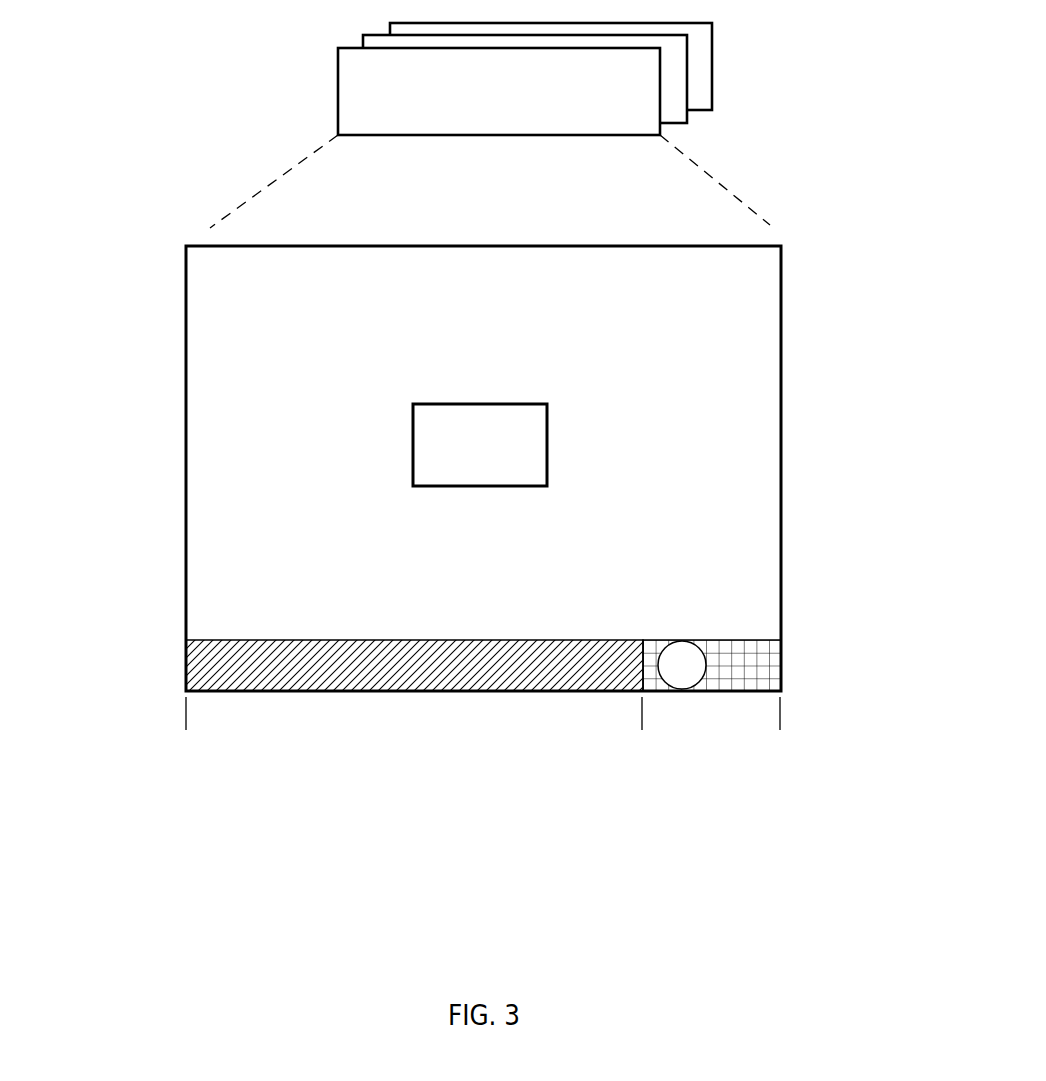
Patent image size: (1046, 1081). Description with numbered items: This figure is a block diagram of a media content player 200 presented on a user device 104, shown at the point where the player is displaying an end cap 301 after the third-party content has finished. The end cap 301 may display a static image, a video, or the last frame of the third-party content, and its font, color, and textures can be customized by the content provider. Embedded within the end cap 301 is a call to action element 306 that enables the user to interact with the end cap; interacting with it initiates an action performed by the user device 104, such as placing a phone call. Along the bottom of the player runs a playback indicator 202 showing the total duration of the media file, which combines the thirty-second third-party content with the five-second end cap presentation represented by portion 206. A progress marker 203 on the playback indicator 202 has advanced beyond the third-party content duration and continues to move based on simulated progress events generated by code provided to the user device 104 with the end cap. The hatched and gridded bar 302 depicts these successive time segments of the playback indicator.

The user device 104 is at (525, 79).
The media content player 200 is at (185, 469).
The end cap 301 is at (740, 375).
The call to action element 306 is at (548, 438).
The timeline progress bar 302 is at (532, 677).
The playback indicator 202 is at (782, 665).
The progress marker 203 is at (682, 665).
The portion of the playback indicator 206 is at (752, 693).